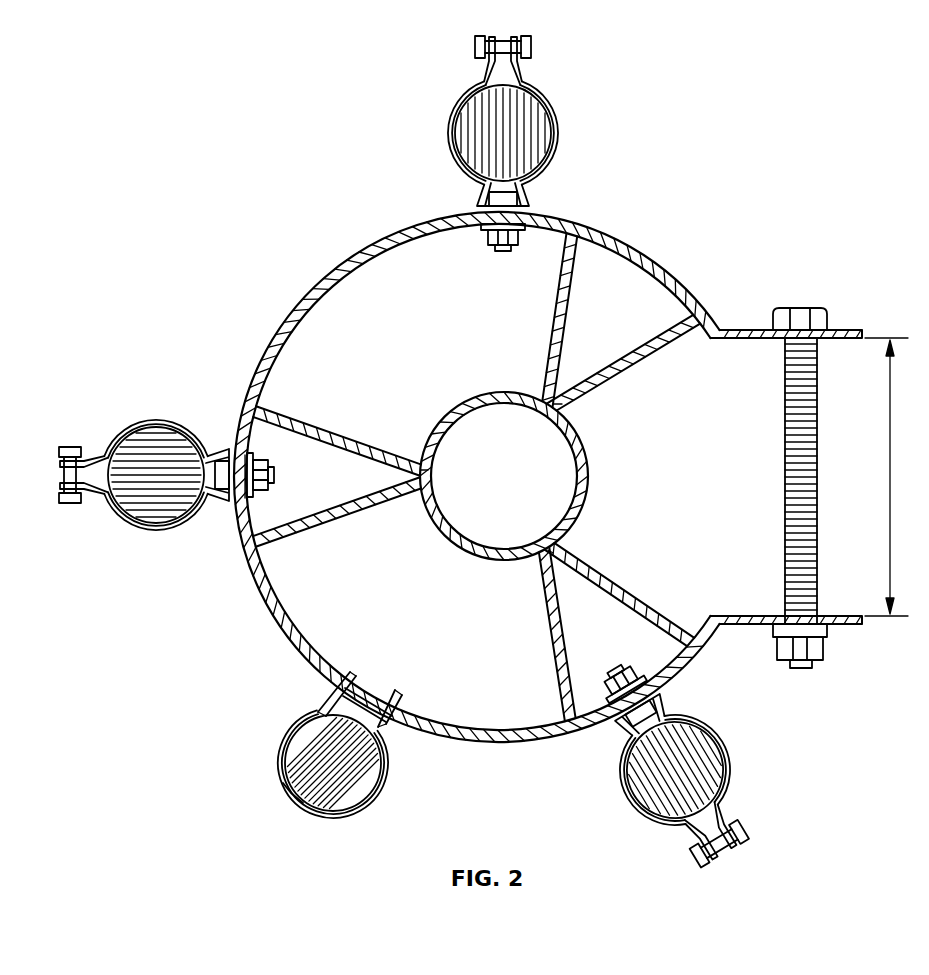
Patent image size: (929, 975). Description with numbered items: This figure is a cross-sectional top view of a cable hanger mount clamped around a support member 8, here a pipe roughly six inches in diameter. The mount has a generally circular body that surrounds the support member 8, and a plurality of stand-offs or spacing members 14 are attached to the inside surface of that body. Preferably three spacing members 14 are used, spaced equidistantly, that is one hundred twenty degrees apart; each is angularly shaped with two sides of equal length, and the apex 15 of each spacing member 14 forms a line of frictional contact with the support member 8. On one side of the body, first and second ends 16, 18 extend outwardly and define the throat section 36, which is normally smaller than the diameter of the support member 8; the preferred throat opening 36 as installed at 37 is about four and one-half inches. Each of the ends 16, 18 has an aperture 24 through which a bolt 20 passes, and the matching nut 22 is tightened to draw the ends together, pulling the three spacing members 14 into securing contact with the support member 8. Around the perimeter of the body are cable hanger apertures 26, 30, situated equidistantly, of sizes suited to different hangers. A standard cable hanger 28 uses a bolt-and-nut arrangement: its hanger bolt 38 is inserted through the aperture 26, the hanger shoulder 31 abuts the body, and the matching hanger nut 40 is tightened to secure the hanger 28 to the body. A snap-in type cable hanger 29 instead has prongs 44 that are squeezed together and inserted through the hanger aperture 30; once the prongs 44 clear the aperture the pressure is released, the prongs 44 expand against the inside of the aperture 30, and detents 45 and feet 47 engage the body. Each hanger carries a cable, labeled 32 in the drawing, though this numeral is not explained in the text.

The support member 8 is at (590, 471).
The spacing members 14 is at (556, 352).
The apex 15 is at (568, 406).
The first end 16 is at (852, 328).
The second end 18 is at (850, 627).
The bolt 20 is at (802, 306).
The nut 22 is at (803, 652).
The aperture 24 is at (775, 339).
The cable hanger aperture 26 is at (370, 262).
The cable hanger 28 is at (530, 82).
The snap-in type cable hanger 29 is at (283, 742).
The hanger aperture 30 is at (372, 694).
The hanger shoulder 31 is at (470, 203).
The pipe 32 is at (490, 146).
The throat section 36 is at (749, 506).
The throat opening as installed 37 is at (886, 477).
The hanger bolt 38 is at (506, 243).
The hanger nut 40 is at (483, 229).
The prongs 44 is at (358, 676).
The detents 45 is at (346, 672).
The feet 47 is at (333, 693).